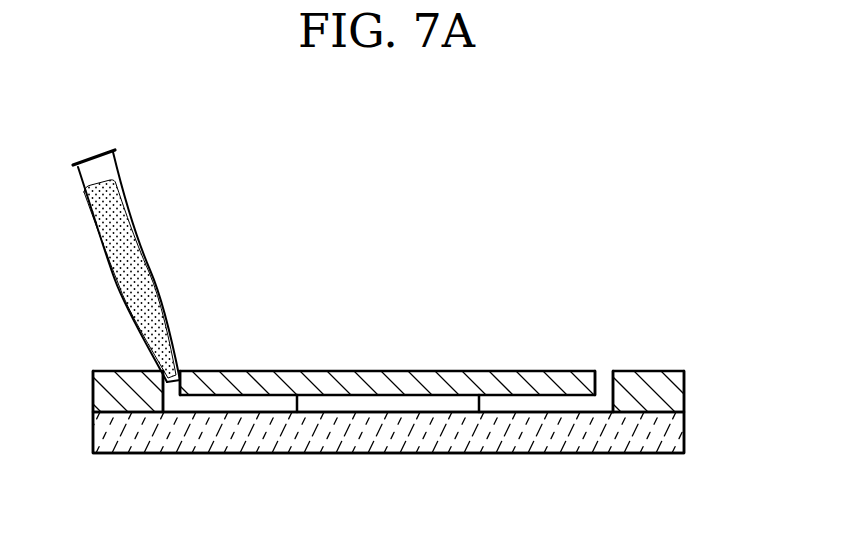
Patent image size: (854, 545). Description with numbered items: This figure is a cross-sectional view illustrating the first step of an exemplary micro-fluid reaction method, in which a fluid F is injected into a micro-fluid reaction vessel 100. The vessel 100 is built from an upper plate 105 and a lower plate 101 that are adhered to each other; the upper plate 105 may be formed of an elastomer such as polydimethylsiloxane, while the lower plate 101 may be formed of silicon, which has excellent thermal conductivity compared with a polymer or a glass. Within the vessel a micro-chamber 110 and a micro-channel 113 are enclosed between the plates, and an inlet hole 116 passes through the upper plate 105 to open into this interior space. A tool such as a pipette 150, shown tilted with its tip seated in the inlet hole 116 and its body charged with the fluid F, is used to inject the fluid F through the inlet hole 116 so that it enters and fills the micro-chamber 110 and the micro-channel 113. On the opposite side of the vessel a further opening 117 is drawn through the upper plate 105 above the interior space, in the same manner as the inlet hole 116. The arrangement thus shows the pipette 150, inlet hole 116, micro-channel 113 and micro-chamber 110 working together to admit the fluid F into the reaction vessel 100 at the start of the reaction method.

The micro-fluid reaction vessel 100 is at (680, 333).
The lower plate 101 is at (684, 435).
The upper plate 105 is at (684, 392).
The micro-chamber 110 is at (390, 410).
The micro-channel 113 is at (242, 410).
The inlet hole 116 is at (172, 388).
The outlet / vent 117 is at (604, 380).
The pipette 150 is at (120, 170).
The fluid F is at (128, 240).